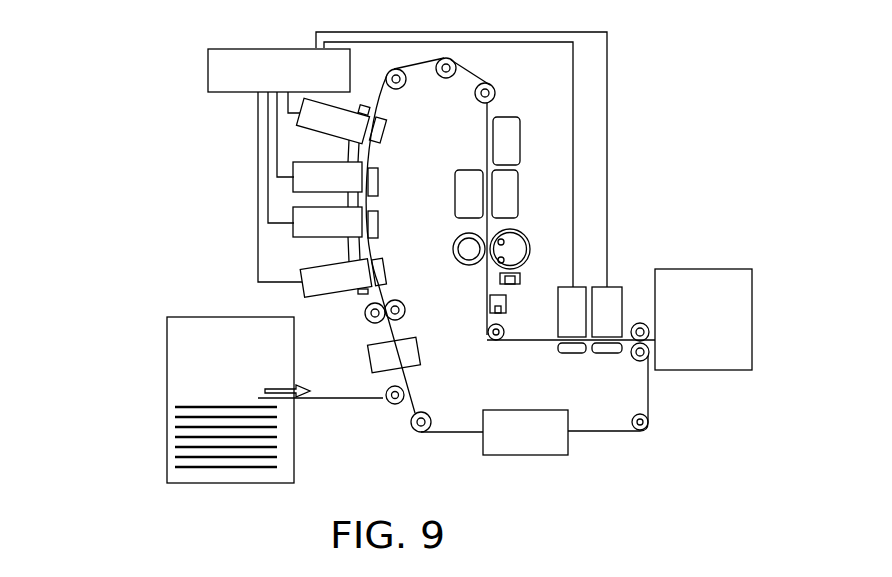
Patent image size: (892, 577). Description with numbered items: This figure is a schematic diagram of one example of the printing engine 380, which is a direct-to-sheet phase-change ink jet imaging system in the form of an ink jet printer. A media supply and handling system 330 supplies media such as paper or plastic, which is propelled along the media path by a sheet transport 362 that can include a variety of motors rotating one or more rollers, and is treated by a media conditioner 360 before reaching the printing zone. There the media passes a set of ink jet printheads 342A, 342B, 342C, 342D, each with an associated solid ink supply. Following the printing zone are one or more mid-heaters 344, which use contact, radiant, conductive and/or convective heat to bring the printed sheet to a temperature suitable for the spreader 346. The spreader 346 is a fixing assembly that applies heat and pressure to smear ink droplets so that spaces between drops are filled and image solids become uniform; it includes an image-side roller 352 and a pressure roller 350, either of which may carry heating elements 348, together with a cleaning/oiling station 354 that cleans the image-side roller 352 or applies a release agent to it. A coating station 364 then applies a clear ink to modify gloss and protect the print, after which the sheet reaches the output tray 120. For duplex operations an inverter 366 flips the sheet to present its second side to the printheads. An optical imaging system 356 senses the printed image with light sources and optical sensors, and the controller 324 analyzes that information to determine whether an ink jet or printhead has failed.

The output tray 120 is at (707, 269).
The controller 324 is at (208, 69).
The media supply and handling system 330 is at (165, 357).
The printhead 342A is at (307, 290).
The printhead 342B is at (292, 227).
The printhead 342C is at (293, 187).
The printhead 342D is at (298, 119).
The mid-heater 344 is at (455, 188).
The spreader 346 is at (530, 220).
The heating elements 348 is at (503, 260).
The pressure roller 350 is at (455, 272).
The image-side roller 352 is at (541, 264).
The cleaning/oiling station 354 is at (513, 287).
The optical imaging system 356 is at (497, 343).
The media conditioner 360 is at (368, 358).
The sheet transport 362 is at (483, 320).
The coating station 364 is at (618, 275).
The inverter 366 is at (570, 447).
The printing engine 380 is at (192, 205).